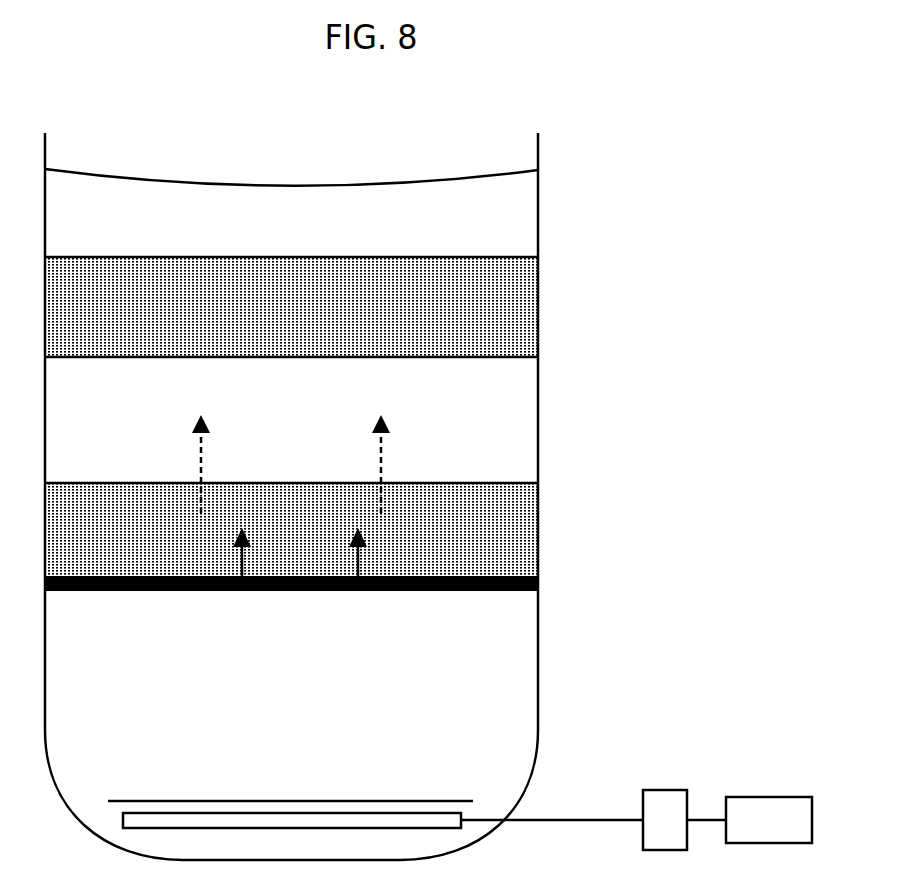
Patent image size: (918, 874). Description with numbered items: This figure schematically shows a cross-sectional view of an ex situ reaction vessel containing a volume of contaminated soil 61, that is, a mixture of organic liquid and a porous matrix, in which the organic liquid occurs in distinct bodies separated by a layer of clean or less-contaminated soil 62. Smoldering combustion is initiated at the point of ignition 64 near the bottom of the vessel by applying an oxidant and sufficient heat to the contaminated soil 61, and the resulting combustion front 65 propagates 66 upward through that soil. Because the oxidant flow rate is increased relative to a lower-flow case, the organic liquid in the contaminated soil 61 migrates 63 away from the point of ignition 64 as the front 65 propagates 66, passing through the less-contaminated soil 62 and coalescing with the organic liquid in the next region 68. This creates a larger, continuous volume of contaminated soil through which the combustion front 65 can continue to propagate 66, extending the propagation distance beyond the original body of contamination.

The next region of contaminated soil 68 is at (384, 310).
The clean or less-contaminated soil 62 is at (290, 406).
The contaminated soil 61 is at (290, 536).
The combustion front 65 is at (444, 591).
The migration of organic liquid 63 is at (201, 451).
The propagation of combustion front 66 is at (358, 554).
The point of ignition 64 is at (286, 800).